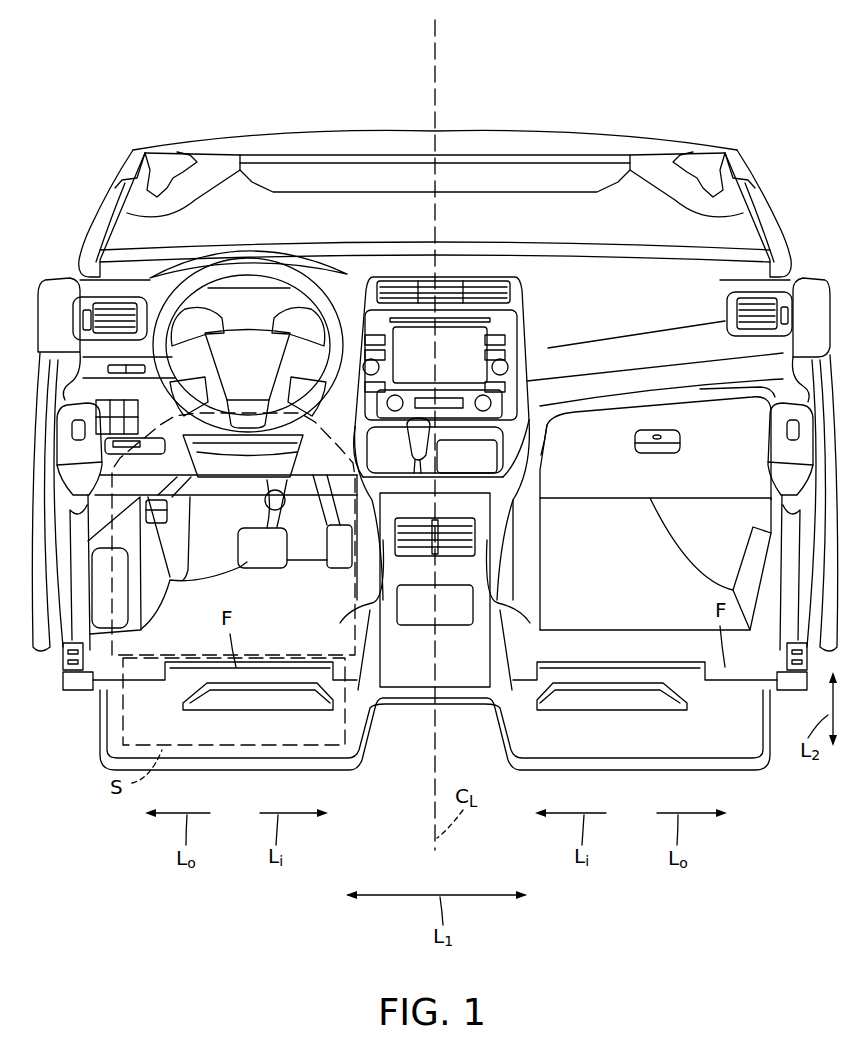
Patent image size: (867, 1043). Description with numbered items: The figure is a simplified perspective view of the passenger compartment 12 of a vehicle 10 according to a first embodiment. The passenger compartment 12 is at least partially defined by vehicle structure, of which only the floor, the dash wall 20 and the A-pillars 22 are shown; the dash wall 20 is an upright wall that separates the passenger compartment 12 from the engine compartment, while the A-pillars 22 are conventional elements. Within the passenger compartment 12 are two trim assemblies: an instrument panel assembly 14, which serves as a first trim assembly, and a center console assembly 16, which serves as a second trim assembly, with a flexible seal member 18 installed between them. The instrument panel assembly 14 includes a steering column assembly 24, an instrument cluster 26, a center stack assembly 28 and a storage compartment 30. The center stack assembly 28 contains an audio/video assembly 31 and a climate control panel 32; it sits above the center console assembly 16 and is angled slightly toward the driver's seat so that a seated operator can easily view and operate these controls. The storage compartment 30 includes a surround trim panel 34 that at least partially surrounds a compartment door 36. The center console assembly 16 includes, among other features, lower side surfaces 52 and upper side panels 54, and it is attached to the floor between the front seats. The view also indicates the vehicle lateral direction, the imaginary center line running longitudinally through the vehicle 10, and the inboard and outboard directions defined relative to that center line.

The vehicle 10 is at (631, 77).
The passenger compartment 12 is at (279, 214).
The instrument panel assembly 14 is at (617, 289).
The center console assembly 16 is at (493, 591).
The flexible seal member 18 is at (513, 507).
The dash wall 20 is at (307, 543).
The A-pillars 22 is at (98, 238).
The steering column assembly 24 is at (247, 352).
The instrument cluster 26 is at (197, 320).
The center stack assembly 28 is at (456, 277).
The storage compartment 30 is at (652, 396).
The audio/video assembly 31 is at (470, 351).
The climate control panel 32 is at (455, 413).
The surround trim panel 34 is at (545, 421).
The compartment door 36 is at (703, 420).
The lower side surfaces 52 is at (370, 617).
The upper side panels 54 is at (503, 481).